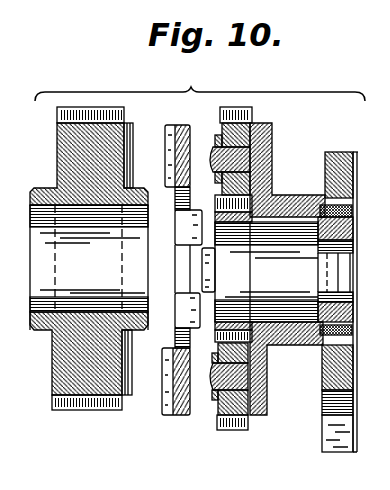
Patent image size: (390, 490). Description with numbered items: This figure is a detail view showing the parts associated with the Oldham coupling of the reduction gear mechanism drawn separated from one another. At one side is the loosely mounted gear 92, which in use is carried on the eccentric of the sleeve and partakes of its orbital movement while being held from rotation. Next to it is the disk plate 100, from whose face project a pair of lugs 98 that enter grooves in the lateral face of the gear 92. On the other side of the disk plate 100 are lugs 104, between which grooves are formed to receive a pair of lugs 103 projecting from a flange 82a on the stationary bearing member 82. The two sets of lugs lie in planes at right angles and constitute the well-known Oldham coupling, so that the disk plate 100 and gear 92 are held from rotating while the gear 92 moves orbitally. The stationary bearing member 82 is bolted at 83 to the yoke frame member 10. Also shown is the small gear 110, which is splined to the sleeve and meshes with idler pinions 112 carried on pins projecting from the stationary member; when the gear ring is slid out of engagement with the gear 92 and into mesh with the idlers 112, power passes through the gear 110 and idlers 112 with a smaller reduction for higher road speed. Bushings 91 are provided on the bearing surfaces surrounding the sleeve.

The yoke frame member 10 is at (325, 377).
The stationary bearing member 82 is at (297, 330).
The flange 82a is at (270, 133).
The bolt 83 is at (323, 193).
The bushing 91 is at (65, 313).
The gear 92 is at (68, 146).
The lugs 98 is at (177, 118).
The disk plate 100 is at (180, 415).
The lugs 103 is at (207, 272).
The lugs 104 is at (195, 305).
The small gear 110 is at (230, 222).
The idler pinions 112 is at (251, 111).